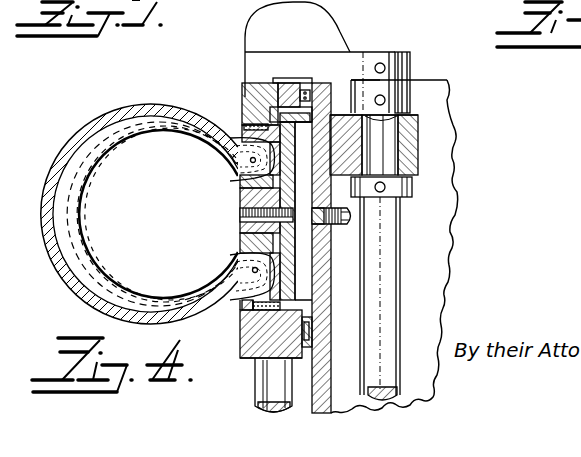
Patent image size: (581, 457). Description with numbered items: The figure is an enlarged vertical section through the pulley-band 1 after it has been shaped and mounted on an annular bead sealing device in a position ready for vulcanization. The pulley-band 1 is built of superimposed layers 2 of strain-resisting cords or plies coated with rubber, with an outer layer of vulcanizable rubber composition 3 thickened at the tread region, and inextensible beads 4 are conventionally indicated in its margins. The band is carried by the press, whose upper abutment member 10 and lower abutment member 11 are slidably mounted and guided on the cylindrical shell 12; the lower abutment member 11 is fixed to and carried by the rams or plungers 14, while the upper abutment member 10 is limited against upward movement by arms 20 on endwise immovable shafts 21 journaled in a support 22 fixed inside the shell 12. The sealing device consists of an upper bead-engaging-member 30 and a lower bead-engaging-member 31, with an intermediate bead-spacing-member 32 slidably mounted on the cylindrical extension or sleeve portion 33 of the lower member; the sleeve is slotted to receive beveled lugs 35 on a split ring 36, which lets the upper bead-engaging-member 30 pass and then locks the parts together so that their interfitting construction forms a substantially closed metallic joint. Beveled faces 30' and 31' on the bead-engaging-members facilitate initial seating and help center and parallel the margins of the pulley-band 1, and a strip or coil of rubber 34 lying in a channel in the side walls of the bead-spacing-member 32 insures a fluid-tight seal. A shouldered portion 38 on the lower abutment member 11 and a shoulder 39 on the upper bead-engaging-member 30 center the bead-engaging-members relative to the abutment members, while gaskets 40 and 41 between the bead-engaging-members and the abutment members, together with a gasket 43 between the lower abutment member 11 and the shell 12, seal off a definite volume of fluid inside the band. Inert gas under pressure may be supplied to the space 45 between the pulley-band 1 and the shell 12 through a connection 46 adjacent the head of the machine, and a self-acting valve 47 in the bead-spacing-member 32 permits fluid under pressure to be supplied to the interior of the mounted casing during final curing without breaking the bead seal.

The pulley-band 1 is at (76, 134).
The superimposed layers 2 is at (107, 150).
The outer layer of vulcanizable rubber composition 3 is at (64, 156).
The inextensible beads 4 is at (251, 160).
The upper abutment member 10 is at (254, 82).
The lower abutment member 11 is at (250, 357).
The cylindrical shell 12 is at (330, 300).
The rams or plungers 14 is at (272, 390).
The arms 20 is at (313, 57).
The shafts 21 is at (383, 253).
The support 22 is at (416, 163).
The upper bead-engaging-member 30 is at (238, 196).
The beveled face 30' is at (243, 210).
The lower bead-engaging-member 31 is at (233, 313).
The beveled face 31' is at (240, 267).
The intermediate bead-spacing-member 32 is at (246, 190).
The cylindrical extension or sleeve portion 33 is at (295, 150).
The strip or coil of rubber 34 is at (238, 178).
The lugs 35 is at (278, 78).
The split ring 36 is at (304, 122).
The shouldered portion 38 is at (306, 304).
The shoulder 39 is at (243, 96).
The gasket 40 is at (241, 112).
The gasket 41 is at (250, 333).
The gasket 43 is at (312, 332).
The space 45 is at (447, 258).
The connection 46 is at (410, 198).
The valve 47 is at (331, 202).